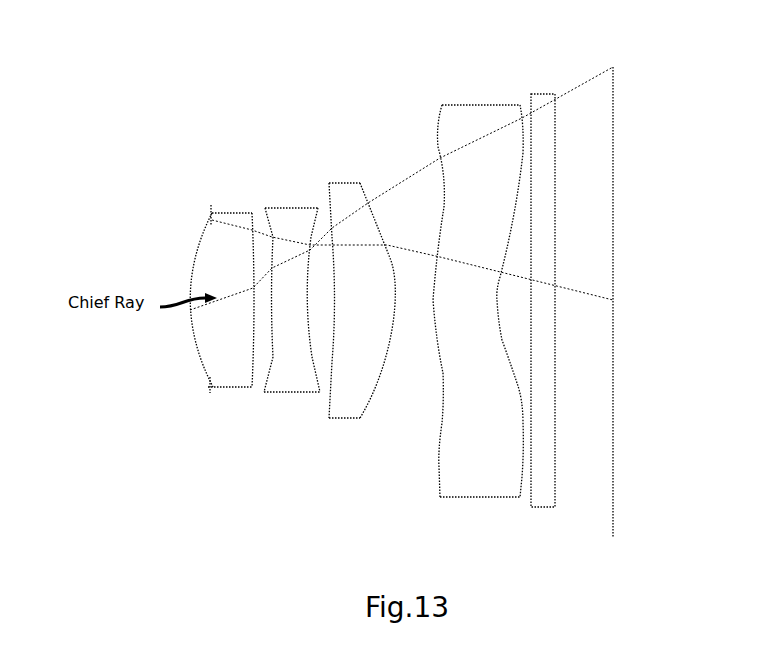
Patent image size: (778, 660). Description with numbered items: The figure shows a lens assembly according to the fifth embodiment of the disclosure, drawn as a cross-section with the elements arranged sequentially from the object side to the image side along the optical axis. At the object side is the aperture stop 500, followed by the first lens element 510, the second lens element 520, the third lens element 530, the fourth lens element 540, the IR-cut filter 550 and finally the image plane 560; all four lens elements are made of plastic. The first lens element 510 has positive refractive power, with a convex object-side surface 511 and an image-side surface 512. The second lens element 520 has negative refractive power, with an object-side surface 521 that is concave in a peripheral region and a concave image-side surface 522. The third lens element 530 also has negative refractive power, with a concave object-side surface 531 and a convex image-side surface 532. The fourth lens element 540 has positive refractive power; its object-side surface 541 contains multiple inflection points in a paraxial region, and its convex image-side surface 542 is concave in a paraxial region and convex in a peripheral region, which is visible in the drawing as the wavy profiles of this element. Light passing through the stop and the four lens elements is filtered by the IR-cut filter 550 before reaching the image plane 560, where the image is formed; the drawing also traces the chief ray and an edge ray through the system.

The aperture stop 500 is at (199, 216).
The first lens element 510 is at (208, 291).
The object-side surface of first lens element 511 is at (188, 355).
The image-side surface of first lens element 512 is at (240, 332).
The second lens element 520 is at (277, 295).
The object-side surface of second lens element 521 is at (263, 362).
The image-side surface of second lens element 522 is at (300, 354).
The third lens element 530 is at (344, 303).
The object-side surface of third lens element 531 is at (318, 410).
The image-side surface of third lens element 532 is at (368, 377).
The fourth lens element 540 is at (458, 282).
The object-side surface of fourth lens element 541 is at (426, 454).
The image-side surface of fourth lens element 542 is at (508, 454).
The IR-cut filter 550 is at (543, 83).
The image plane 560 is at (631, 97).